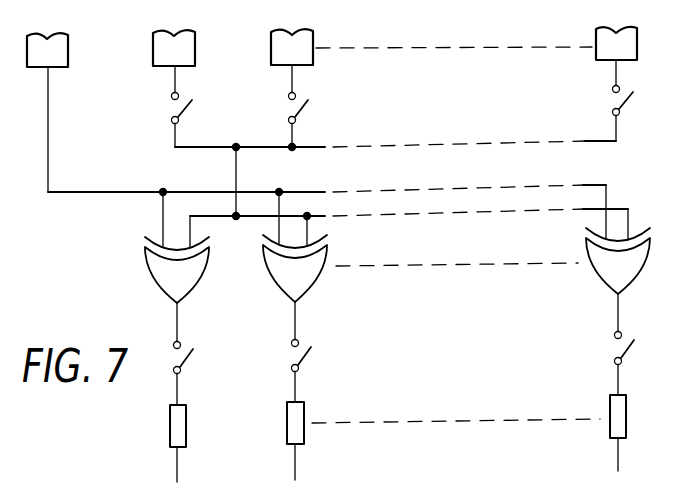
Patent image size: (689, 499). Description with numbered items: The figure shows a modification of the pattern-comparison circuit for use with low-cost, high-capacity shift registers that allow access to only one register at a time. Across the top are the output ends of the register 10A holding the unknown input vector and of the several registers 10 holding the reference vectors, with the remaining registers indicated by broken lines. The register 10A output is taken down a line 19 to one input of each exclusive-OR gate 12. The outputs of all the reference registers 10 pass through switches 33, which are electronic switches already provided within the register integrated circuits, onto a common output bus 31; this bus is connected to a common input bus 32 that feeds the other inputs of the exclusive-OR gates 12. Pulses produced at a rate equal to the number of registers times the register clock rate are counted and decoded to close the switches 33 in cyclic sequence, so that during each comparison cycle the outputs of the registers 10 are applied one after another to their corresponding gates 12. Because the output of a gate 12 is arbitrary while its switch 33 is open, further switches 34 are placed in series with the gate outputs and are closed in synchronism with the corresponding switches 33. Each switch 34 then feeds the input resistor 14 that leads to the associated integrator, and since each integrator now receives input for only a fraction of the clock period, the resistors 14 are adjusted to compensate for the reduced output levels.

The register 10A is at (68, 43).
The register 10 is at (271, 46).
The switch 33 is at (292, 108).
The common output bus 31 is at (312, 147).
The bus line 19 is at (100, 194).
The common input bus 32 is at (325, 216).
The exclusive-OR gate 12 is at (263, 266).
The switch 34 is at (294, 356).
The input resistor 14 is at (287, 416).